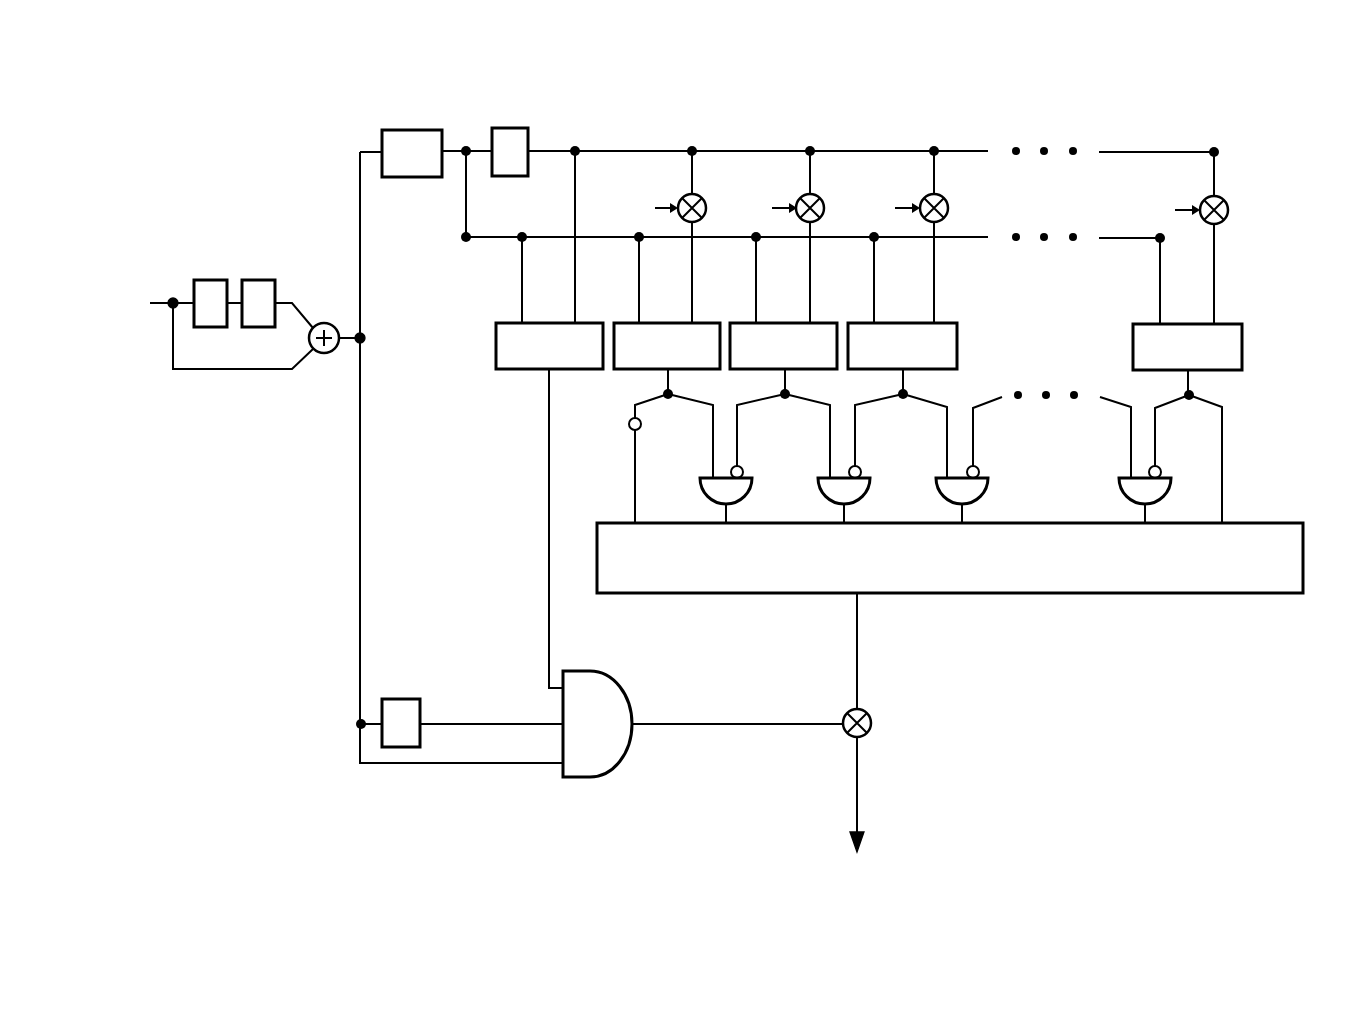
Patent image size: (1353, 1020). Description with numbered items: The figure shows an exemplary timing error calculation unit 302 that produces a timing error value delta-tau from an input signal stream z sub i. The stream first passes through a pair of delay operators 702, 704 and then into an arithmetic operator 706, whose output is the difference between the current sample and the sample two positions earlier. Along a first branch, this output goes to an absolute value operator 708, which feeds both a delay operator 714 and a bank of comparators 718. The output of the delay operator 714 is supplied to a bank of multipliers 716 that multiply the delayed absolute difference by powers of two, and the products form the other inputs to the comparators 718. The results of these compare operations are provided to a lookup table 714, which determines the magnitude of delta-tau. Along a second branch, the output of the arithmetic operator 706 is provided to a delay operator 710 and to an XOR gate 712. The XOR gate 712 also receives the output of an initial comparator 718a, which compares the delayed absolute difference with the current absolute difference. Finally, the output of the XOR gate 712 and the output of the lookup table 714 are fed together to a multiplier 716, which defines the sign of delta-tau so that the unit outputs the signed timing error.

The timing error calculation unit 302 is at (947, 84).
The delay operator 702 is at (211, 280).
The delay operator 704 is at (258, 280).
The arithmetic operator 706 is at (324, 354).
The absolute value operator 708 is at (411, 128).
The delay operator 710 is at (400, 698).
The XOR gate 712 is at (1233, 457).
The delay operator / lookup table 714 is at (508, 128).
The multiplier 716 is at (1253, 202).
The comparator 718 is at (1255, 348).
The initial comparator 718a is at (496, 346).